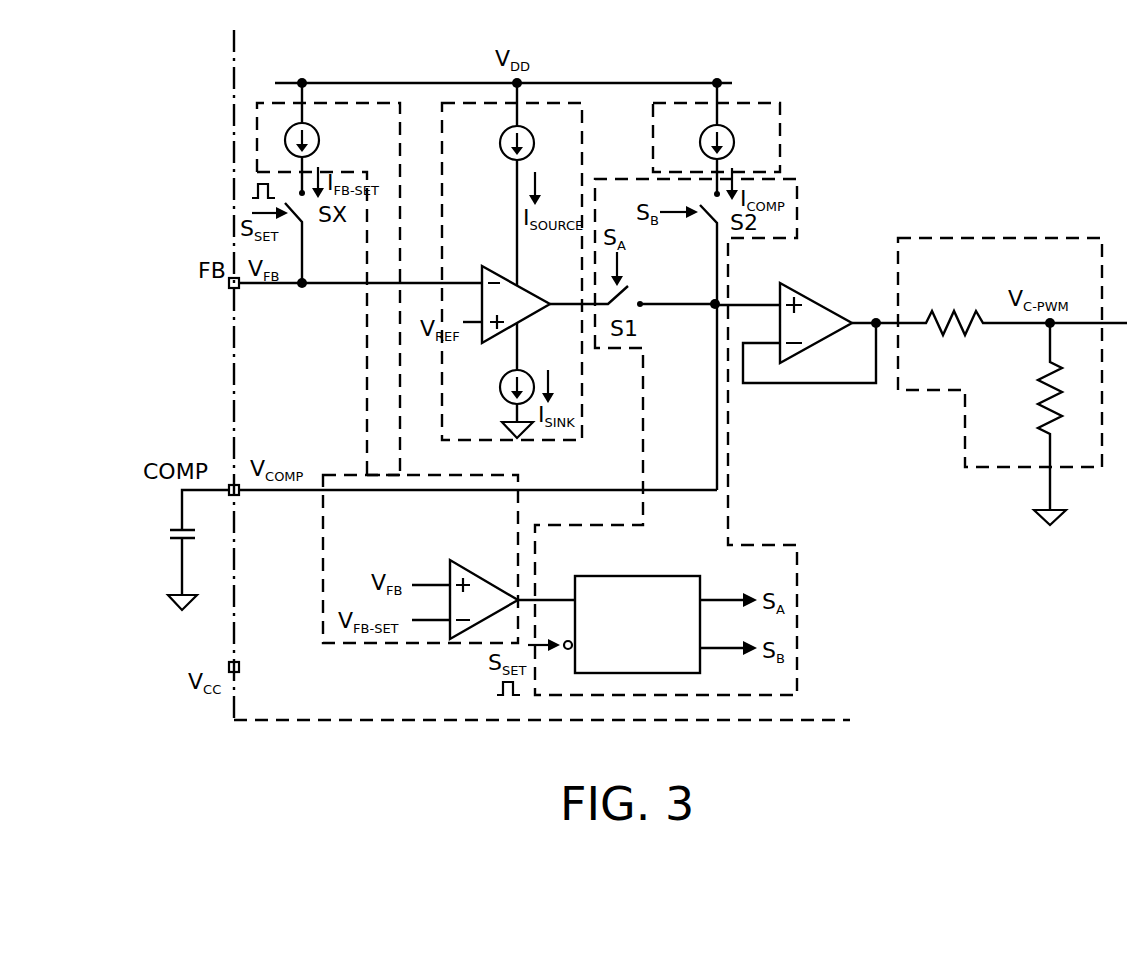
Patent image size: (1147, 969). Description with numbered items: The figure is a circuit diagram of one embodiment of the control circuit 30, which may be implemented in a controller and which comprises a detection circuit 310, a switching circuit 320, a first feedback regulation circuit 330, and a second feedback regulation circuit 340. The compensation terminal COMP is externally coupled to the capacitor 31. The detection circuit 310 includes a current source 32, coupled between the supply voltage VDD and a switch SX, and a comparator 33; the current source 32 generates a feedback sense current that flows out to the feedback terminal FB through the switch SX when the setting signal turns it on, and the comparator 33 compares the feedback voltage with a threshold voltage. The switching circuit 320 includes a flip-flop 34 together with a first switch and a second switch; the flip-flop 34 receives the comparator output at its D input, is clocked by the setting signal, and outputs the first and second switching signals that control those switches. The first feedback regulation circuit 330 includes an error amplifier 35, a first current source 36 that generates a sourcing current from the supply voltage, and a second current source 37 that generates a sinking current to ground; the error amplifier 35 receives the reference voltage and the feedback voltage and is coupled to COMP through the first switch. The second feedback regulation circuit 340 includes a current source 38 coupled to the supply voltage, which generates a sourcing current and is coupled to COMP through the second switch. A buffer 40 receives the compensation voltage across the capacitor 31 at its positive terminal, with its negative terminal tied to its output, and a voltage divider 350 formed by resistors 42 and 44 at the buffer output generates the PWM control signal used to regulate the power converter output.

The control circuit 30 is at (318, 31).
The detection circuit 310 is at (343, 103).
The first feedback regulation circuit 330 is at (495, 103).
The second feedback regulation circuit 340 is at (744, 103).
The voltage divider 350 is at (1003, 238).
The switching circuit 320 is at (770, 545).
The current source 32 is at (321, 138).
The first current source 36 is at (536, 184).
The current source 38 is at (736, 138).
The error amplifier 35 is at (507, 303).
The second current source 37 is at (525, 380).
The buffer 40 is at (818, 327).
The resistor 42 is at (953, 306).
The resistor 44 is at (1032, 424).
The capacitor 31 is at (198, 550).
The comparator 33 is at (449, 559).
The flip-flop 34 is at (666, 609).